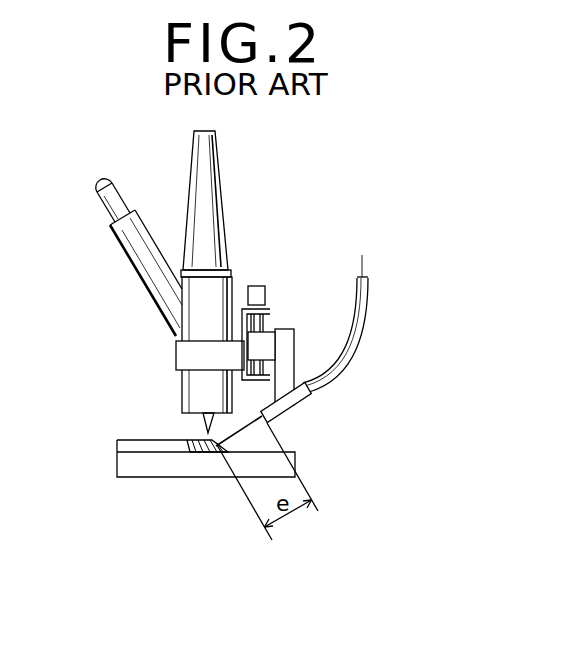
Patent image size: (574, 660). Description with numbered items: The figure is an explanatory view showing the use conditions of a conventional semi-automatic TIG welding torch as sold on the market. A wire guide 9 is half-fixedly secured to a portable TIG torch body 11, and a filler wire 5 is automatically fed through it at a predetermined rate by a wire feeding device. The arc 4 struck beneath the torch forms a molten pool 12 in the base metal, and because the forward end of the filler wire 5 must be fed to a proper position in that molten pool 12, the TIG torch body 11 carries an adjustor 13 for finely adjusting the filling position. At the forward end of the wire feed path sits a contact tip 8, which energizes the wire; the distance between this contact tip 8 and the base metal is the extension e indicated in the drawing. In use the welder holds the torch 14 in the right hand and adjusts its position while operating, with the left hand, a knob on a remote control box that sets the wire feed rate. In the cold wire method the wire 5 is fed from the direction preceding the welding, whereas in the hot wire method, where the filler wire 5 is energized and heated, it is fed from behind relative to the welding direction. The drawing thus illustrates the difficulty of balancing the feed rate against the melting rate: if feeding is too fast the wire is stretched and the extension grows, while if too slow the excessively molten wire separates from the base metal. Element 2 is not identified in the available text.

The base metal workpiece 2 is at (163, 477).
The arc 4 is at (200, 442).
The filler wire 5 is at (238, 428).
The contact tip 8 is at (299, 403).
The wire guide 9 is at (360, 337).
The TIG torch body 11 is at (221, 183).
The molten pool 12 is at (193, 445).
The adjustor 13 is at (271, 313).
The torch 14 is at (133, 262).